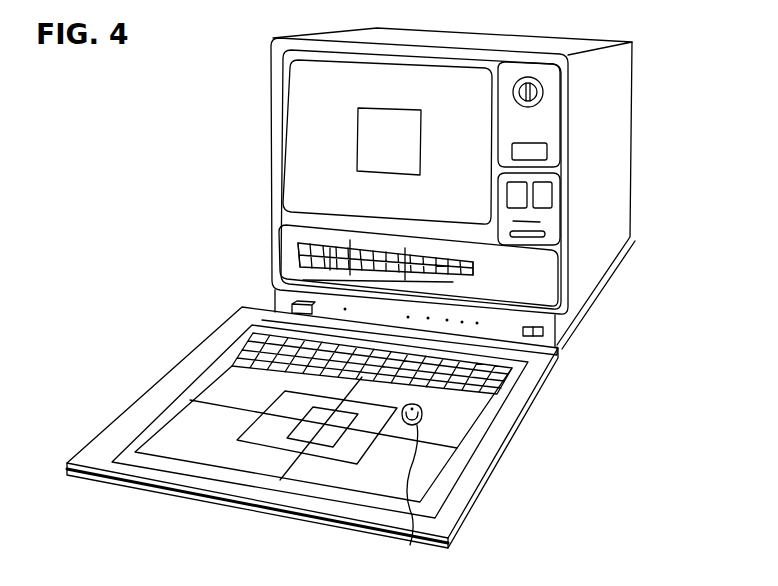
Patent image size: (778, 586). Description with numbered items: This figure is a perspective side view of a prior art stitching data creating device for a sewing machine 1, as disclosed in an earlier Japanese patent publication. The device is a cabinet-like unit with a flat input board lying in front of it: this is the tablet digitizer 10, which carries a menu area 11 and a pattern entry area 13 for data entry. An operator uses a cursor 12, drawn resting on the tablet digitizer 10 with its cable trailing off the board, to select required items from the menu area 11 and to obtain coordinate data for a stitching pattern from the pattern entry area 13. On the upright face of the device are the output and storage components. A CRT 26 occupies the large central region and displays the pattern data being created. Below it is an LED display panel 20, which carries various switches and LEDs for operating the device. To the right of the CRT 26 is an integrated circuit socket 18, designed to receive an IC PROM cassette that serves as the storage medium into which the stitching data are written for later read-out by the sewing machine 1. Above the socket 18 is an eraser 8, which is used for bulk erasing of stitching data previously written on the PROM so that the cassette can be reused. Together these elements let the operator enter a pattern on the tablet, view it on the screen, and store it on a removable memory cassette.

The sewing machine 1 is at (240, 194).
The eraser 8 is at (553, 82).
The tablet digitizer 10 is at (115, 422).
The menu area 11 is at (497, 372).
The cursor 12 is at (422, 413).
The pattern entry area 13 is at (173, 450).
The integrated circuit socket 18 is at (557, 190).
The LED display panel 20 is at (493, 273).
The CRT 26 is at (305, 83).